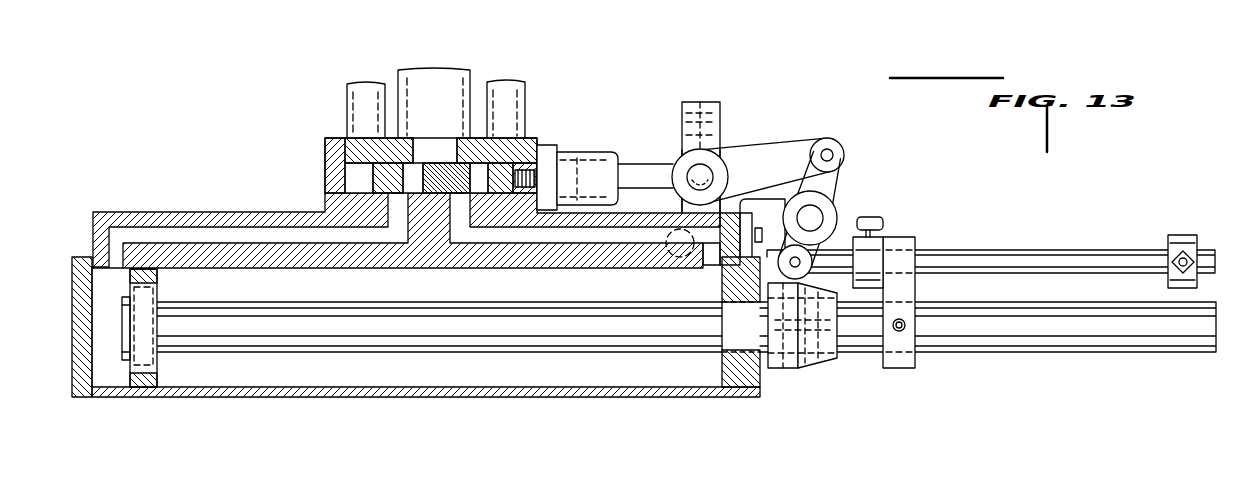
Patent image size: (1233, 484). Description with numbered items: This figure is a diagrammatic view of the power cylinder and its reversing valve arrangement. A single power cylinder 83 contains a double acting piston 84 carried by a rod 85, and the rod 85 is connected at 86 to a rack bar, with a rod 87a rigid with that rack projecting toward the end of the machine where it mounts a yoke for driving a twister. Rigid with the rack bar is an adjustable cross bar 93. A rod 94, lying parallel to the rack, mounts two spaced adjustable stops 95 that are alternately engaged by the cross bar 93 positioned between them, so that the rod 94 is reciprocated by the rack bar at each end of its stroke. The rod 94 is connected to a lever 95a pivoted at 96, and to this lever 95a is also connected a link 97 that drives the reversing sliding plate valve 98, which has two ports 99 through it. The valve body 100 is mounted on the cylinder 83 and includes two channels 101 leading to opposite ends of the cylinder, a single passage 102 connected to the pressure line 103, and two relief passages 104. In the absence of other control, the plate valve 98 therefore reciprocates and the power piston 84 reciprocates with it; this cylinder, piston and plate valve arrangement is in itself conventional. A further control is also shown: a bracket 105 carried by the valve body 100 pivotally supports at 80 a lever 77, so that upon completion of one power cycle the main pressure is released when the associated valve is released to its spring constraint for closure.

The lever 77 is at (680, 148).
The pivot 80 is at (723, 115).
The power cylinder 83 is at (425, 390).
The double acting piston 84 is at (147, 290).
The rod 85 is at (530, 340).
The connection 86 is at (805, 367).
The rod 87a is at (1040, 343).
The adjustable cross bar 93 is at (905, 290).
The rod 94 is at (1033, 262).
The adjustable stops 95 is at (873, 260).
The lever 95a is at (832, 177).
The pivot 96 is at (817, 217).
The link 97 is at (783, 157).
The reversing sliding plate valve 98 is at (540, 145).
The ports 99 is at (327, 152).
The valve body 100 is at (272, 210).
The channels 101 is at (167, 237).
The passage 102 is at (433, 147).
The pressure line 103 is at (443, 80).
The relief passages 104 is at (367, 143).
The bracket 105 is at (722, 142).